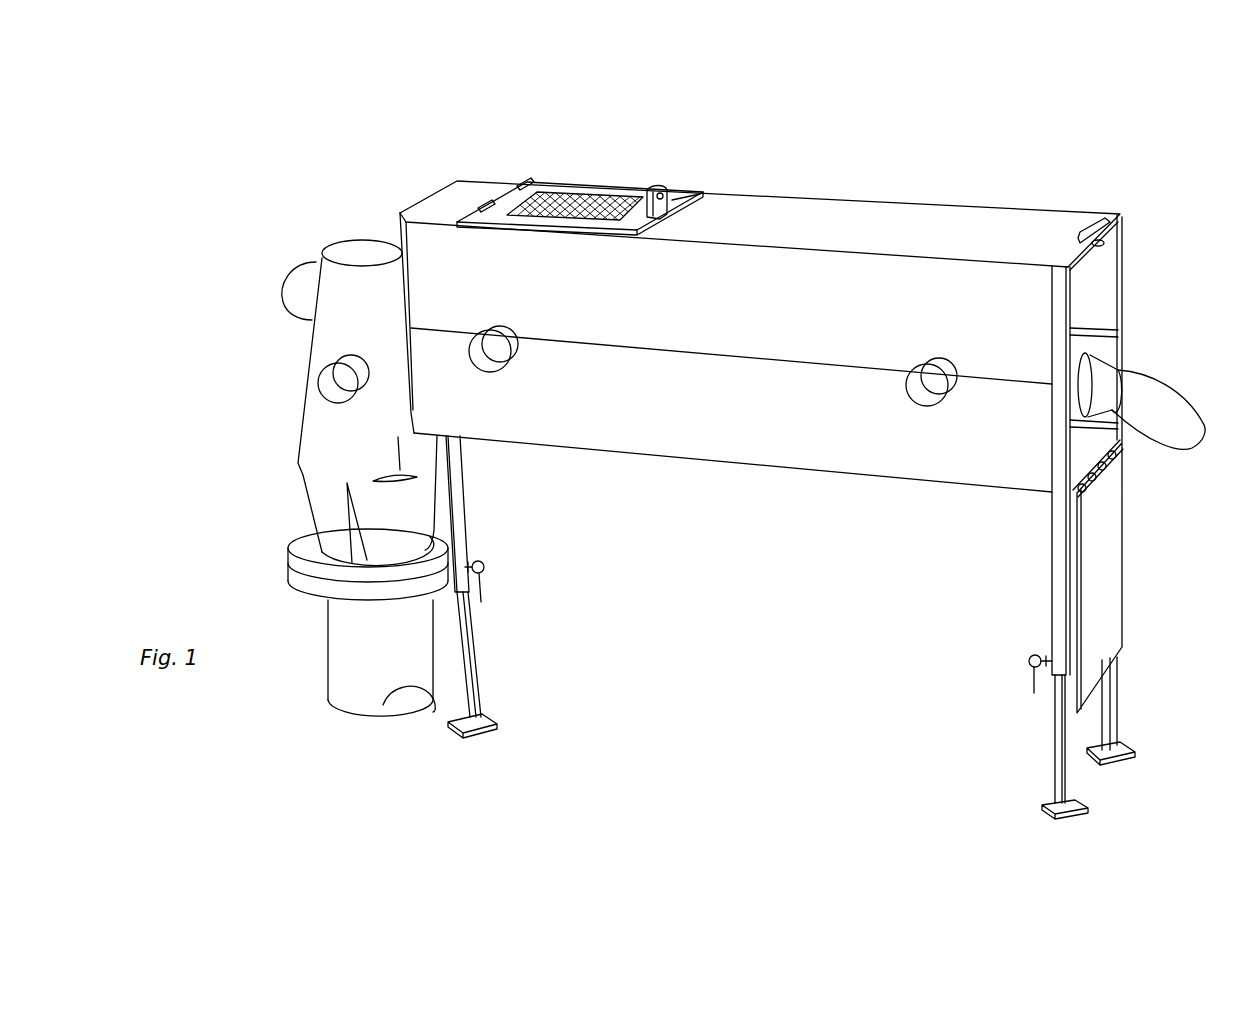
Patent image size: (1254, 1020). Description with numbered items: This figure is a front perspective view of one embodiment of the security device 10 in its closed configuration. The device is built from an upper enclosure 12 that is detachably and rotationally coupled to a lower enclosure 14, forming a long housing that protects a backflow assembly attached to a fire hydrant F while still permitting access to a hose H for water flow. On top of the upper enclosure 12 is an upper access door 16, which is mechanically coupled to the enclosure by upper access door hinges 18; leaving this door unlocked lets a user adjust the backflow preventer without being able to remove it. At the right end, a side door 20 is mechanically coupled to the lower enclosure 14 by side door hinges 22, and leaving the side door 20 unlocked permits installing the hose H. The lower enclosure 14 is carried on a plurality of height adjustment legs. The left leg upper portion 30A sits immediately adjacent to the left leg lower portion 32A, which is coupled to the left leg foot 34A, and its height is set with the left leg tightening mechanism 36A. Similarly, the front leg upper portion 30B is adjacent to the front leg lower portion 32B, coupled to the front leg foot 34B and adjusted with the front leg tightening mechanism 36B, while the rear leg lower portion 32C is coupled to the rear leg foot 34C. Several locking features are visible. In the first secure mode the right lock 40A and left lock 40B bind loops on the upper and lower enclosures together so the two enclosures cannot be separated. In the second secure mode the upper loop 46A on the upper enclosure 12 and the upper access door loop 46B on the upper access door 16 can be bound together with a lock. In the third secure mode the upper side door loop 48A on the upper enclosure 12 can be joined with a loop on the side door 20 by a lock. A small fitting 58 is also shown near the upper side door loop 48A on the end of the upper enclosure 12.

The security device 10 is at (549, 108).
The upper enclosure 12 is at (893, 220).
The lower enclosure 14 is at (790, 445).
The upper access door 16 is at (585, 203).
The upper access door hinges 18 is at (523, 190).
The side door 20 is at (1100, 596).
The side door hinges 22 is at (1120, 445).
The left leg upper portion 30A is at (460, 492).
The front leg upper portion 30B is at (1055, 553).
The left leg lower portion 32A is at (480, 656).
The front leg lower portion 32B is at (1055, 746).
The rear leg lower portion 32C is at (1112, 671).
The left leg foot 34A is at (493, 714).
The front leg foot 34B is at (1045, 802).
The rear leg foot 34C is at (1125, 752).
The left leg tightening mechanism 36A is at (487, 571).
The front leg tightening mechanism 36B is at (1030, 657).
The right lock 40A is at (932, 388).
The left lock 40B is at (500, 349).
The upper loop 46A is at (690, 192).
The upper access door loop 46B is at (657, 190).
The upper side door loop 48A is at (1112, 240).
The latch slot 58 is at (1095, 228).
The fire hydrant F is at (340, 384).
The hose H is at (1143, 395).